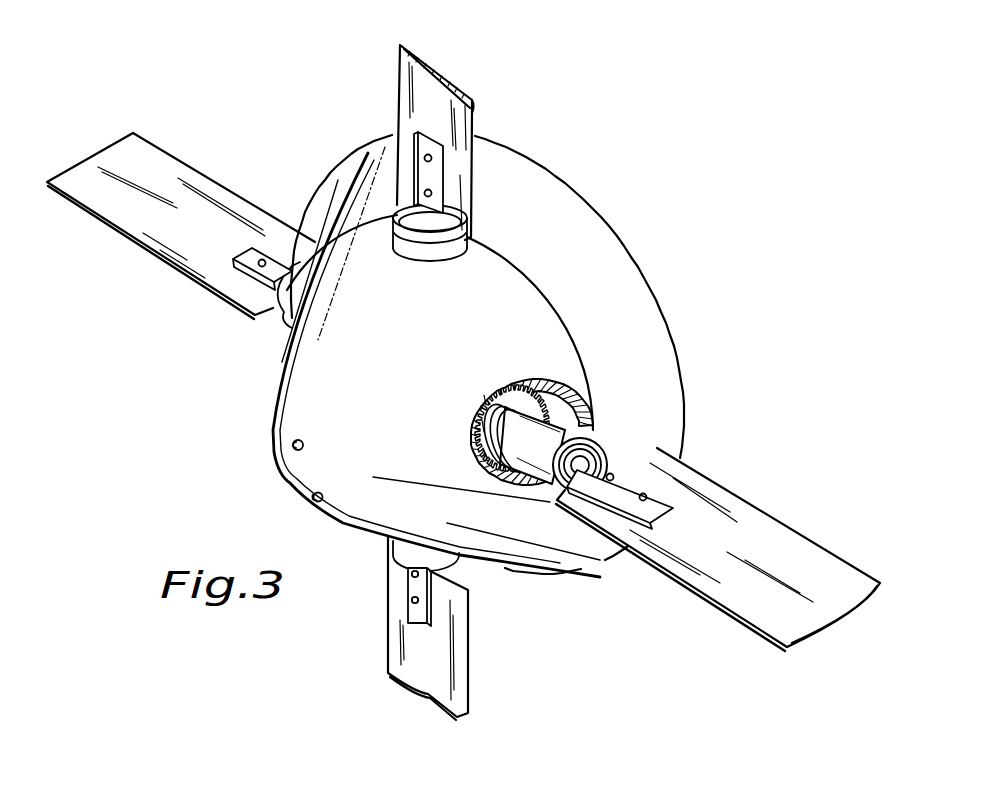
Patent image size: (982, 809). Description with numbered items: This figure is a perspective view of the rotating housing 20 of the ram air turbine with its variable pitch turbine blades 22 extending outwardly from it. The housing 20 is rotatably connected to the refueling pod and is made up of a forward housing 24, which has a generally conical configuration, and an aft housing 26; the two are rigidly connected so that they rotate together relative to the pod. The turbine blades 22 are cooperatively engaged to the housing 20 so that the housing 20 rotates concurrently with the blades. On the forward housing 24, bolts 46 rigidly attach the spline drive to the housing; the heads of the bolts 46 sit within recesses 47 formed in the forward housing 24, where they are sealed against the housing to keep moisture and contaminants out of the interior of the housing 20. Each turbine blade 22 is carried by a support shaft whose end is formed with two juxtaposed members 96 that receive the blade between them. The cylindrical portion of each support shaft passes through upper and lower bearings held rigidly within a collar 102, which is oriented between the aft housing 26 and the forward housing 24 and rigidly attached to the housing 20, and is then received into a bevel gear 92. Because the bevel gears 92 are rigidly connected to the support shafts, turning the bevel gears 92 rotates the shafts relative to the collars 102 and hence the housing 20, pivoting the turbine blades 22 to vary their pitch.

The housing 20 is at (258, 418).
The variable pitch turbine blades 22 is at (160, 170).
The forward housing 24 is at (280, 473).
The aft housing 26 is at (592, 242).
The bolts 46 is at (306, 446).
The recesses 47 is at (314, 501).
The bevel gears 92 is at (508, 385).
The juxtaposed members 96 is at (236, 280).
The collar 102 is at (282, 320).